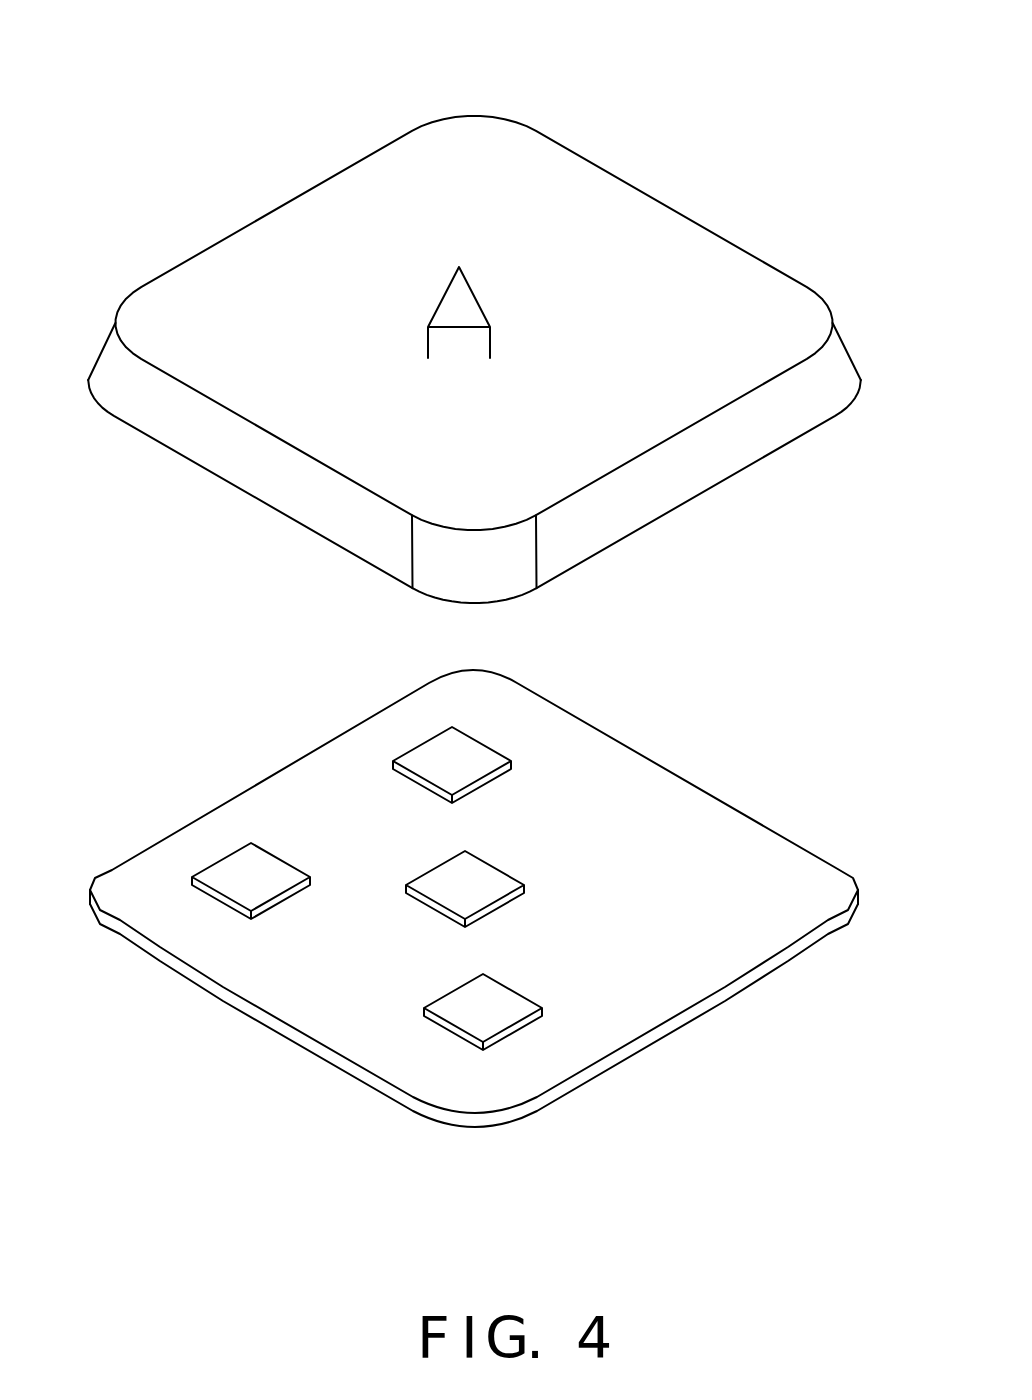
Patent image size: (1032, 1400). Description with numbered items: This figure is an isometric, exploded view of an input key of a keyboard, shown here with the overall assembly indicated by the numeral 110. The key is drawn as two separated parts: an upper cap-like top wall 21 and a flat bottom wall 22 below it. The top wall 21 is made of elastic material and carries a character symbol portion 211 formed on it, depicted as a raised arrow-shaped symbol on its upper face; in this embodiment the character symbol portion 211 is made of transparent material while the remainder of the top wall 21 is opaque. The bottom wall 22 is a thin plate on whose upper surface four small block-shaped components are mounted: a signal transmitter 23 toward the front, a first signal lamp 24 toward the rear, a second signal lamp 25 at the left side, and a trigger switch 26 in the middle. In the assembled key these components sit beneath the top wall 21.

The key assembly 110 is at (263, 87).
The top wall 21 is at (720, 450).
The character symbol portion 211 is at (482, 297).
The bottom wall 22 is at (768, 850).
The signal transmitter 23 is at (495, 1018).
The first signal lamp 24 is at (425, 757).
The second signal lamp 25 is at (228, 873).
The trigger switch 26 is at (483, 880).